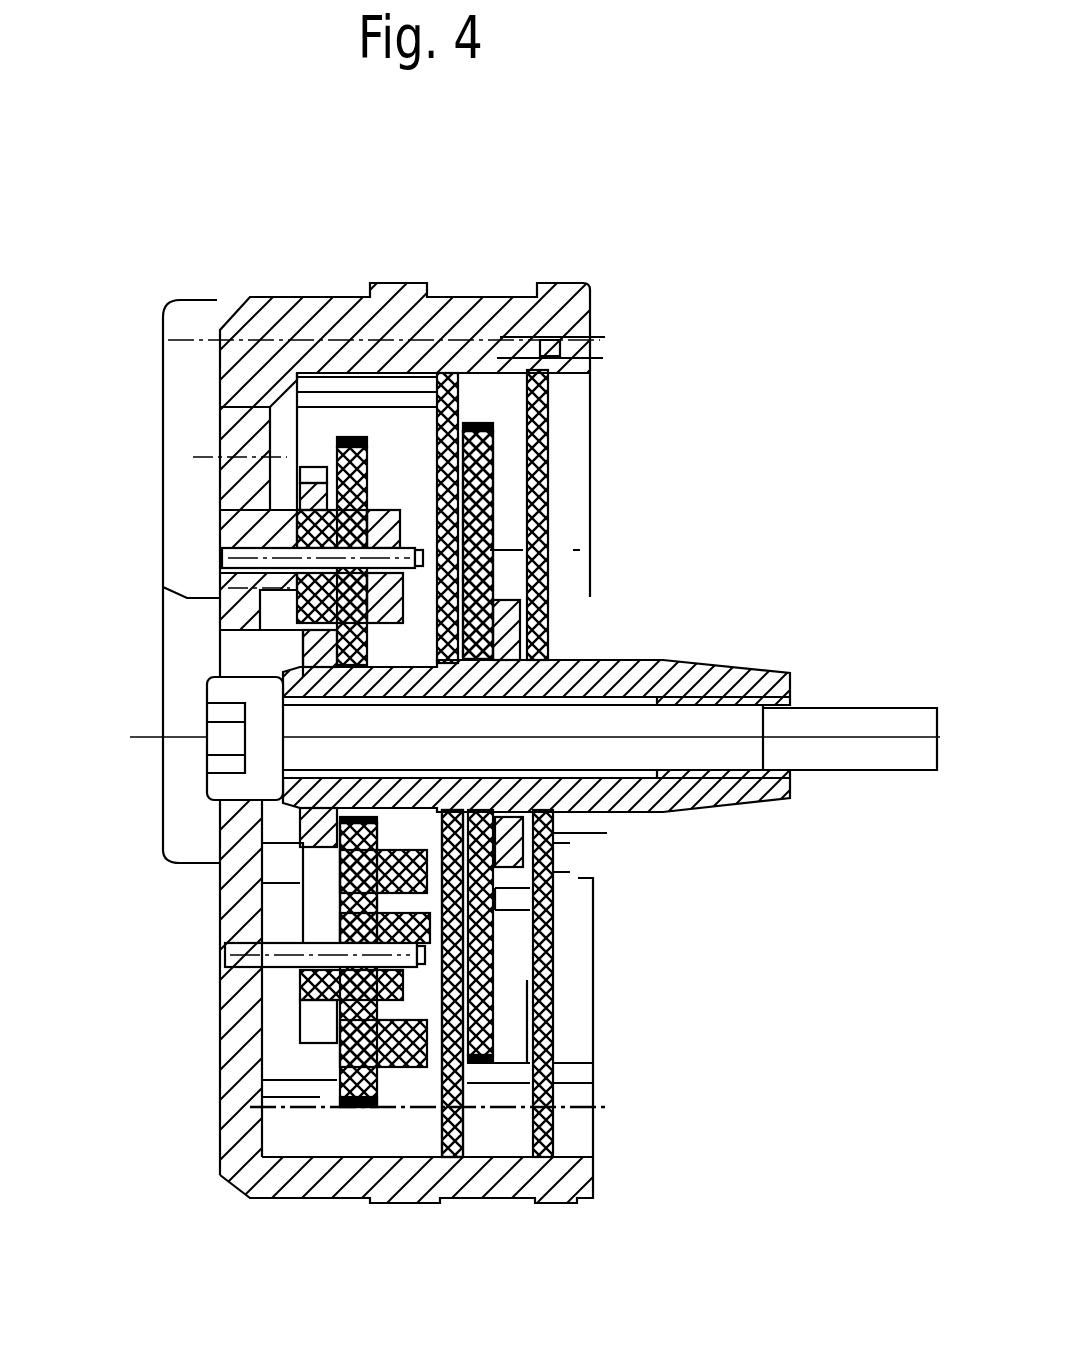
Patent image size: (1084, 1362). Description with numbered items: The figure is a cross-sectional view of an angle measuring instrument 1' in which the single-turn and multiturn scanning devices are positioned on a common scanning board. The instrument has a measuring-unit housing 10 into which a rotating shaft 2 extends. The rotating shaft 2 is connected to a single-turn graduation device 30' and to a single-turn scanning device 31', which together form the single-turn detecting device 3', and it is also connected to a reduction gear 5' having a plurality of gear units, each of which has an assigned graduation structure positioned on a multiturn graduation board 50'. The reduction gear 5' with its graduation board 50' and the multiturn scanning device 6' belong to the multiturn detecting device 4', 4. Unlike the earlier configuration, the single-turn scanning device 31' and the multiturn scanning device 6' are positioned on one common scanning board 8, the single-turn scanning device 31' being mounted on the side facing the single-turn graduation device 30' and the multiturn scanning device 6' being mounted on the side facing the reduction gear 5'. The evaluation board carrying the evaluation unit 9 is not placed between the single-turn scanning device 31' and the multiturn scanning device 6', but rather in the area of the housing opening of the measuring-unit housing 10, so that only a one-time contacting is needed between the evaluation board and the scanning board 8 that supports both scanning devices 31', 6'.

The angle measuring instrument 1' is at (190, 482).
The measuring-unit housing 10 is at (456, 325).
The single-turn detecting device 3' is at (594, 523).
The single-turn graduation device 30' is at (593, 515).
The rotating shaft 2 is at (817, 723).
The multiturn graduation board 50' is at (263, 883).
The reduction gear 5' is at (272, 956).
The single-turn scanning device 31' is at (620, 983).
The evaluation unit 9 is at (552, 1060).
The multiturn detecting device 4' is at (179, 1011).
The multiturn scanning device 6' is at (347, 1183).
The multiturn/single-turn scanning board 8 is at (453, 1158).
The multiturn detecting device 4 is at (524, 1066).